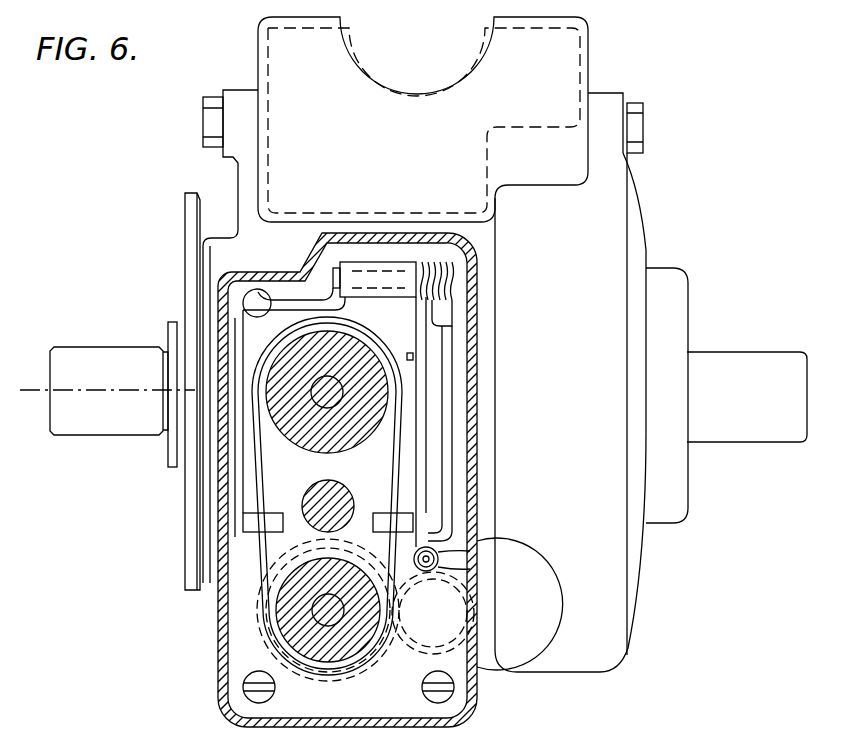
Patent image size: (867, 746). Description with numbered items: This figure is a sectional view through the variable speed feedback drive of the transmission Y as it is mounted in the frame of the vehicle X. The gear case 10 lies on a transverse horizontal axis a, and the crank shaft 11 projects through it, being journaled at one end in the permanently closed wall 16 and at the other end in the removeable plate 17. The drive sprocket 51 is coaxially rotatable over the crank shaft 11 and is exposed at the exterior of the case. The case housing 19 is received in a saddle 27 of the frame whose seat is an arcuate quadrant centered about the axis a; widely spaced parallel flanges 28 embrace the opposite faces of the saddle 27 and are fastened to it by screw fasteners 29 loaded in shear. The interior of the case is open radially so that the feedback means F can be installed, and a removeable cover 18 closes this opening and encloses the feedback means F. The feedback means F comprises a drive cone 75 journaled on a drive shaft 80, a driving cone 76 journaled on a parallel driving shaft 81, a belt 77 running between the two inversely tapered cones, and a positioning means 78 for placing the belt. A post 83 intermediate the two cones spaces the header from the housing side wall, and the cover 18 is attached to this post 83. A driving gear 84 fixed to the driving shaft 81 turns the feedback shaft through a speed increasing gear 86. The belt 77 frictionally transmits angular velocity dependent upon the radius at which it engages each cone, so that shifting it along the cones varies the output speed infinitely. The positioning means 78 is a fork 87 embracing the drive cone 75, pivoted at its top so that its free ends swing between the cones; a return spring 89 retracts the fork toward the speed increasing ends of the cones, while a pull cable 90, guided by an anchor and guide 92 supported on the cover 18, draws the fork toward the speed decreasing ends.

The vehicle X is at (592, 54).
The saddle 27 is at (416, 179).
The flanges 28 is at (232, 92).
The screw fasteners 29 is at (206, 127).
The transmission Y is at (642, 205).
The gear case 10 is at (606, 251).
The case housing 19 is at (566, 390).
The removeable plate 17 is at (638, 575).
The crank shaft 11 is at (768, 398).
The drive sprocket 51 is at (184, 207).
The wall 16 is at (212, 267).
The axis a is at (33, 390).
The cover 18 is at (221, 640).
The feedback means F is at (257, 600).
The belt 77 is at (272, 483).
The drive cone 75 is at (361, 354).
The drive shaft 80 is at (332, 401).
The post 83 is at (357, 489).
The driving cone 76 is at (349, 647).
The driving shaft 81 is at (336, 602).
The positioning means 78 is at (433, 486).
The fork 87 is at (428, 445).
The return spring 89 is at (447, 360).
The anchor and guide 92 is at (470, 551).
The pull cable 90 is at (470, 569).
The speed increasing gear 86 is at (480, 607).
The driving gear 84 is at (296, 680).